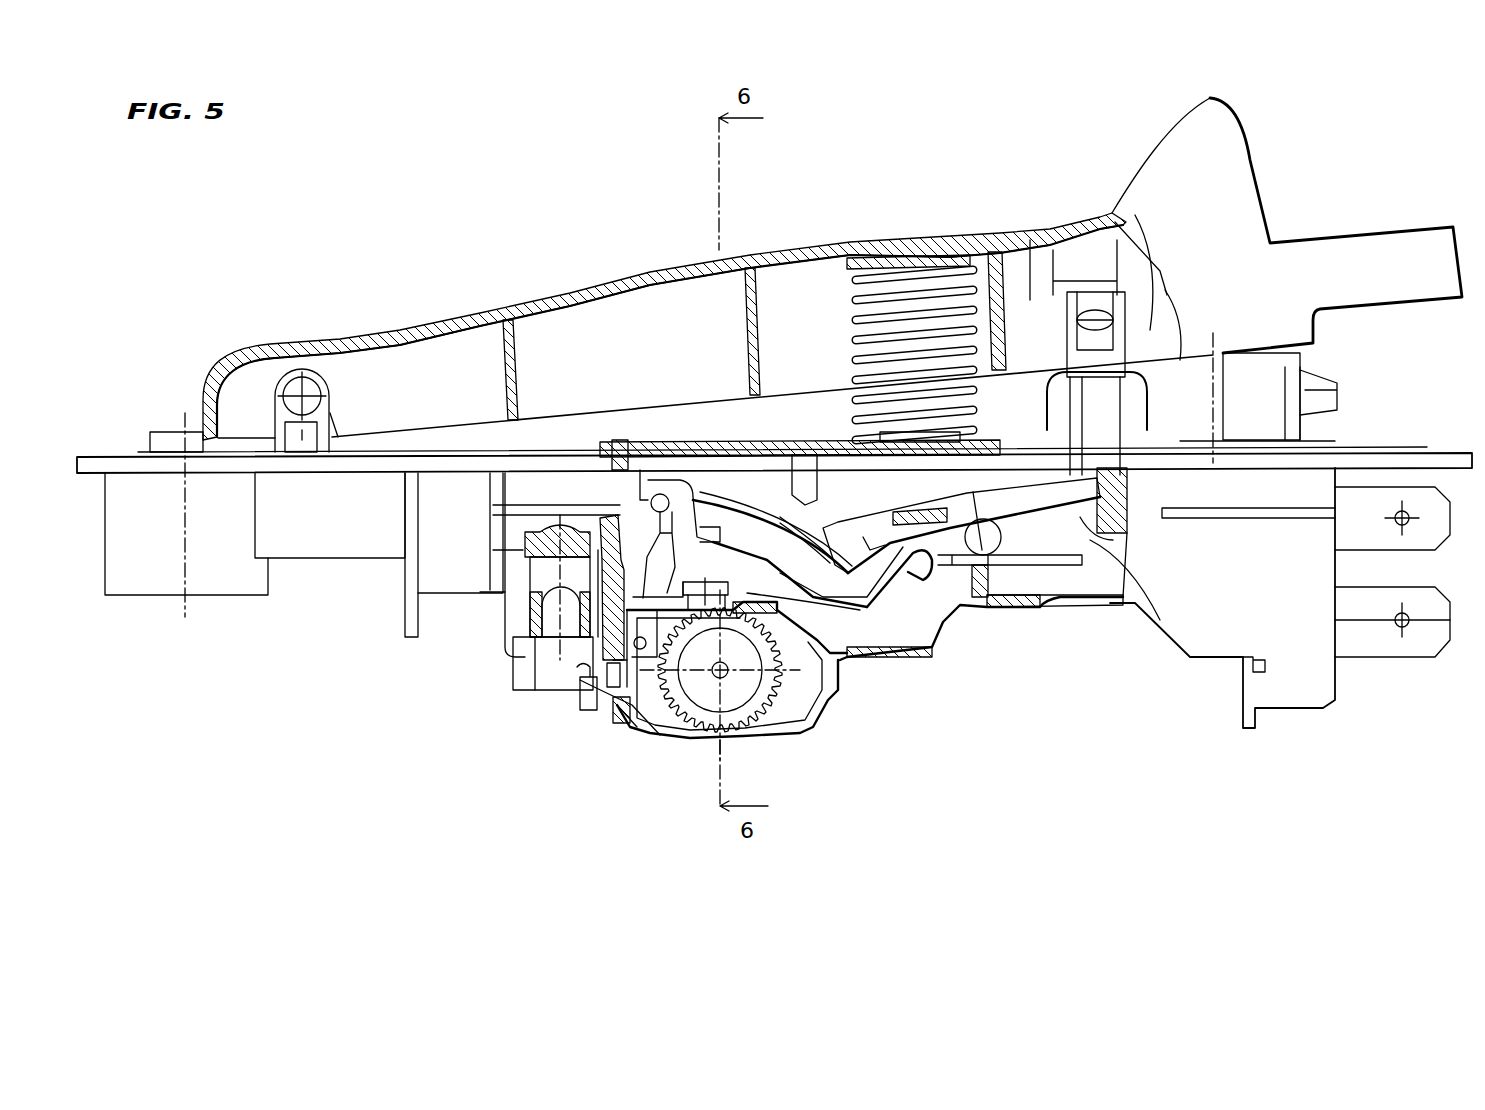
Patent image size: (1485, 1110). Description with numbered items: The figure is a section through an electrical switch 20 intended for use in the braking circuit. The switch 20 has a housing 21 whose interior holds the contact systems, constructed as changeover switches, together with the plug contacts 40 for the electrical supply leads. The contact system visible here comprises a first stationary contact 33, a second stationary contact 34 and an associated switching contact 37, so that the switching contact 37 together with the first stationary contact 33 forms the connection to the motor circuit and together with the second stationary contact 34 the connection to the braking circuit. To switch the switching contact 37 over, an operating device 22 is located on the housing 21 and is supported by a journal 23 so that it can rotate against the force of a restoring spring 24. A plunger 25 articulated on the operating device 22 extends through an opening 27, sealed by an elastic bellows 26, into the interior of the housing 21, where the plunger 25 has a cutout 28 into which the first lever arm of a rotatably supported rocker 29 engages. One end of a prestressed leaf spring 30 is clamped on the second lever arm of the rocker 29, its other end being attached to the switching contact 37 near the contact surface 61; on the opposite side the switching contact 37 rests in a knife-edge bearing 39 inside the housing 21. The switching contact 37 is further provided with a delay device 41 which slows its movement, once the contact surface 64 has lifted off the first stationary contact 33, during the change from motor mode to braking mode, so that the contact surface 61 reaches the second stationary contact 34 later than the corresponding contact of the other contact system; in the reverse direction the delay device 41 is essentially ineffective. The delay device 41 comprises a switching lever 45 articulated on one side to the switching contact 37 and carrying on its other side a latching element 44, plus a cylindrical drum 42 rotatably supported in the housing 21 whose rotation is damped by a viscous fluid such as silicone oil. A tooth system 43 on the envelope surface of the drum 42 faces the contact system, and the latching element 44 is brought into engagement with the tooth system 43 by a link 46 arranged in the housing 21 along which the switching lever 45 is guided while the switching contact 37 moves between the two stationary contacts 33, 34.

The electrical switch 20 is at (858, 212).
The housing 21 is at (1207, 625).
The operating device 22 is at (668, 268).
The journal 23 is at (305, 385).
The restoring spring 24 is at (925, 268).
The plunger 25 is at (1108, 290).
The elastic bellows 26 is at (1137, 295).
The opening 27 is at (1030, 240).
The cutout 28 is at (1103, 610).
The rocker 29 is at (1037, 517).
The leaf spring 30 is at (757, 508).
The first stationary contact 33 is at (820, 680).
The second stationary contact 34 is at (667, 443).
The switching contact 37 is at (870, 660).
The knife-edge bearing 39 is at (977, 603).
The plug contacts 40 is at (1385, 633).
The delay device 41 is at (655, 740).
The cylindrical drum 42 is at (750, 735).
The tooth system 43 is at (790, 705).
The latching element 44 is at (598, 690).
The switching lever 45 is at (570, 682).
The link 46 is at (640, 700).
The contact surface 61 is at (662, 452).
The contact surface 64 is at (698, 493).